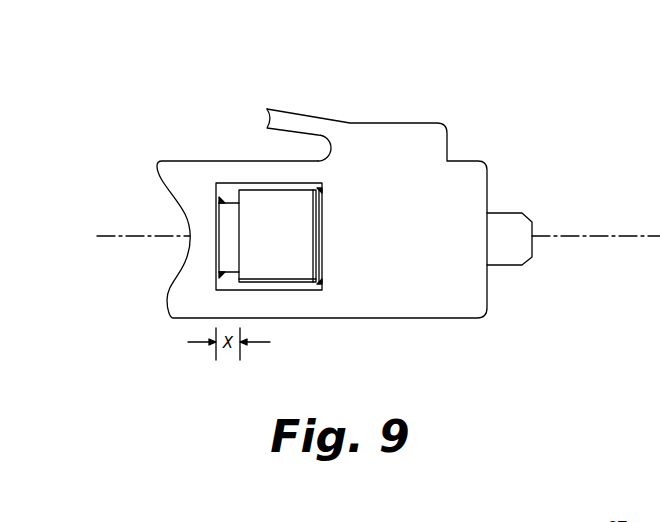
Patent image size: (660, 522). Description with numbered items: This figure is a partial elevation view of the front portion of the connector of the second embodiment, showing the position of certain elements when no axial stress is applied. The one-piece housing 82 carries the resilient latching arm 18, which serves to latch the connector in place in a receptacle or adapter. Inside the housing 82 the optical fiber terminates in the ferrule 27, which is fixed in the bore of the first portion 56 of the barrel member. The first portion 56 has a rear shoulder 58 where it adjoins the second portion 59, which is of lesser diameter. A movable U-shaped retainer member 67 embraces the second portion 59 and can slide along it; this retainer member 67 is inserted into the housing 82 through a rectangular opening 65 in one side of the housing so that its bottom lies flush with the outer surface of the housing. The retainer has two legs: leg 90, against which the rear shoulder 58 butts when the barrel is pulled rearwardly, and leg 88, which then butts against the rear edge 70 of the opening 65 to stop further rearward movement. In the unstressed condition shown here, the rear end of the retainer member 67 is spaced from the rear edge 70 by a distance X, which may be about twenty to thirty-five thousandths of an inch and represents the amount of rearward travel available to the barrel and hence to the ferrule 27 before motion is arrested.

The resilient latching arm 18 is at (297, 112).
The ferrule 27 is at (512, 210).
The first portion of barrel member 56 is at (320, 235).
The rear shoulder 58 is at (322, 188).
The second portion of barrel member 59 is at (228, 203).
The rectangular opening 65 is at (223, 283).
The U-shaped retainer member 67 is at (288, 262).
The rear edge of opening 70 is at (217, 203).
The housing 82 is at (178, 160).
The leg of retainer member 88 is at (238, 227).
The leg of retainer member 90 is at (317, 213).